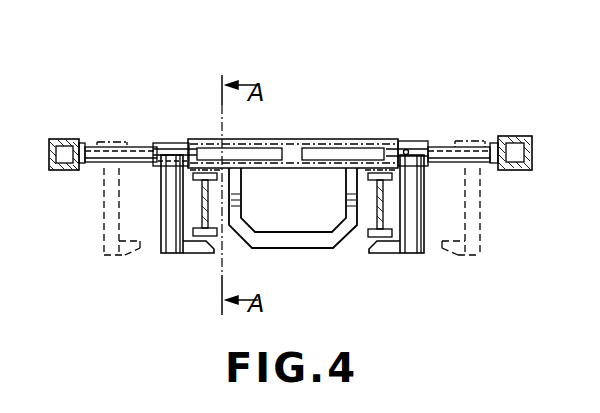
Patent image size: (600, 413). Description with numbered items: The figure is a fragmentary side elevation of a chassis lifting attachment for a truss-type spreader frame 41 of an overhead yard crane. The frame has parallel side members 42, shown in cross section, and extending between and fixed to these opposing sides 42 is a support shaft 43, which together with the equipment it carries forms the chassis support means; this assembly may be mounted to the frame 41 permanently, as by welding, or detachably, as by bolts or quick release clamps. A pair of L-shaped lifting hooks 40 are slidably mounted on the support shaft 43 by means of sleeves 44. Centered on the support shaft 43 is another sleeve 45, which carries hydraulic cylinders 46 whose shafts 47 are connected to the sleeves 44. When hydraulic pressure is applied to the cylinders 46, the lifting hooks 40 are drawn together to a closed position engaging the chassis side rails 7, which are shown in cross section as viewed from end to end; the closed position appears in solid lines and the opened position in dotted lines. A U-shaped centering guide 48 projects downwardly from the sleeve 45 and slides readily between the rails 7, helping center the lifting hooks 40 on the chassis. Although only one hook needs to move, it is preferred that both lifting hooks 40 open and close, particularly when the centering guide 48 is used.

The lifting hooks 40 is at (395, 262).
The truss-type spreader frame 41 is at (358, 80).
The side members 42 is at (70, 139).
The support shaft 43 is at (134, 144).
The sleeves 44 is at (430, 141).
The sleeve 45 is at (309, 139).
The hydraulic cylinders 46 is at (267, 150).
The shafts 47 is at (404, 142).
The centering guide 48 is at (286, 249).
The chassis side rails 7 is at (364, 235).